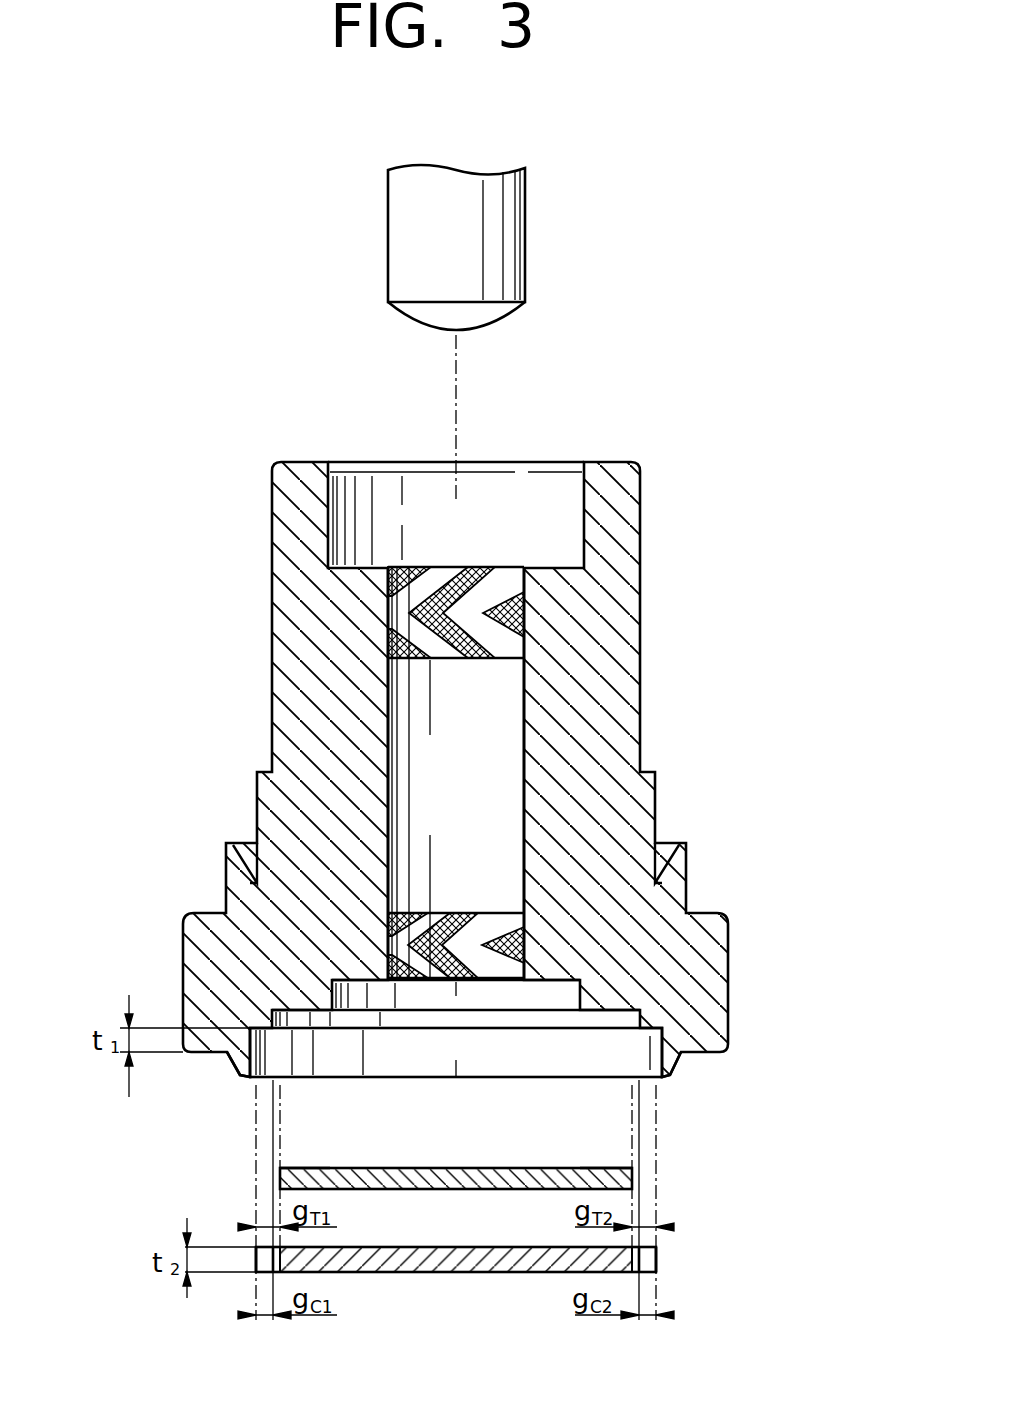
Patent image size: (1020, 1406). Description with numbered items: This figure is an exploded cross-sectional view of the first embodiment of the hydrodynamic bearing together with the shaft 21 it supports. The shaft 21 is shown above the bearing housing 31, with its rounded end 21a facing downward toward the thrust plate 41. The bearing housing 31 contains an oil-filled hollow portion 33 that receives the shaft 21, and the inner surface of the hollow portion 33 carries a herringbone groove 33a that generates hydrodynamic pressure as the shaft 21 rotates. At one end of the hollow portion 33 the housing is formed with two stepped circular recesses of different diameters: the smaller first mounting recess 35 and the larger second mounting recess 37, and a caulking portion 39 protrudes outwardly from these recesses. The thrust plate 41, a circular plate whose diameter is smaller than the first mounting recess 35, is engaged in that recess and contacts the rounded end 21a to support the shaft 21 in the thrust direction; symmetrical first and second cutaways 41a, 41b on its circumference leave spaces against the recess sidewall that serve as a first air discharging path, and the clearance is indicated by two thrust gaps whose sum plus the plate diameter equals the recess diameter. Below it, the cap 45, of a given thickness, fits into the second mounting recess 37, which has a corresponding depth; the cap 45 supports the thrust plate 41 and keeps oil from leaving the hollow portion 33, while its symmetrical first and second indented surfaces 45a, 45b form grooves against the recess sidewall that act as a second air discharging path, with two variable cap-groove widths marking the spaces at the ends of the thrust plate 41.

The shaft 21 is at (520, 232).
The rounded end 21a is at (505, 316).
The bearing housing 31 is at (628, 683).
The hollow portion 33 is at (478, 791).
The herringbone groove 33a is at (456, 913).
The first mounting recess 35 is at (600, 1022).
The second mounting recess 37 is at (672, 1062).
The caulking portion 39 is at (237, 1077).
The thrust plate 41 is at (630, 1180).
The first cutaway 41a is at (335, 1171).
The second cutaway 41b is at (597, 1171).
The cap 45 is at (440, 1273).
The first indented surface 45a is at (255, 1273).
The second indented surface 45b is at (645, 1256).